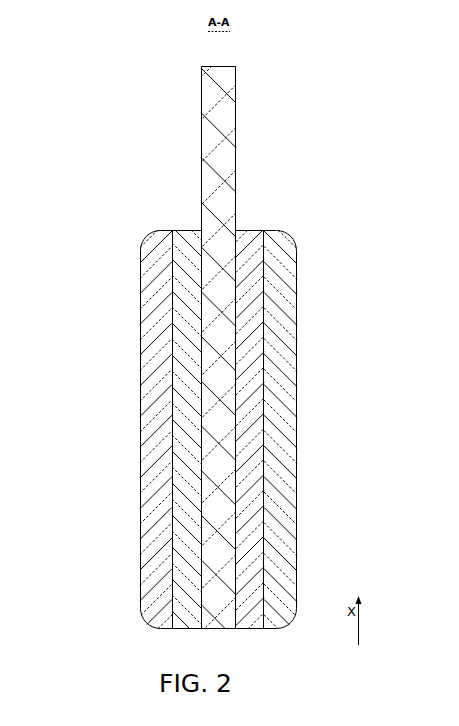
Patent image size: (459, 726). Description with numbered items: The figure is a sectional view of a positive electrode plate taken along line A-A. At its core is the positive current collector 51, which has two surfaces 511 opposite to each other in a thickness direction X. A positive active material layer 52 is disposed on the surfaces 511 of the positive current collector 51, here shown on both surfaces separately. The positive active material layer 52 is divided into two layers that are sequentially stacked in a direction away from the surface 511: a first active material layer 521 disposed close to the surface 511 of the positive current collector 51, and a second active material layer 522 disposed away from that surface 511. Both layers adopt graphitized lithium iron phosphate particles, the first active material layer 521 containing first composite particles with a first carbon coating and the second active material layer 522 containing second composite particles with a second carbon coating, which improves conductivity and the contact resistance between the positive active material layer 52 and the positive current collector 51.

The positive current collector 51 is at (219, 345).
The surface 511 is at (199, 200).
The positive active material layer 52 is at (117, 223).
The first active material layer 521 is at (183, 293).
The second active material layer 522 is at (278, 423).